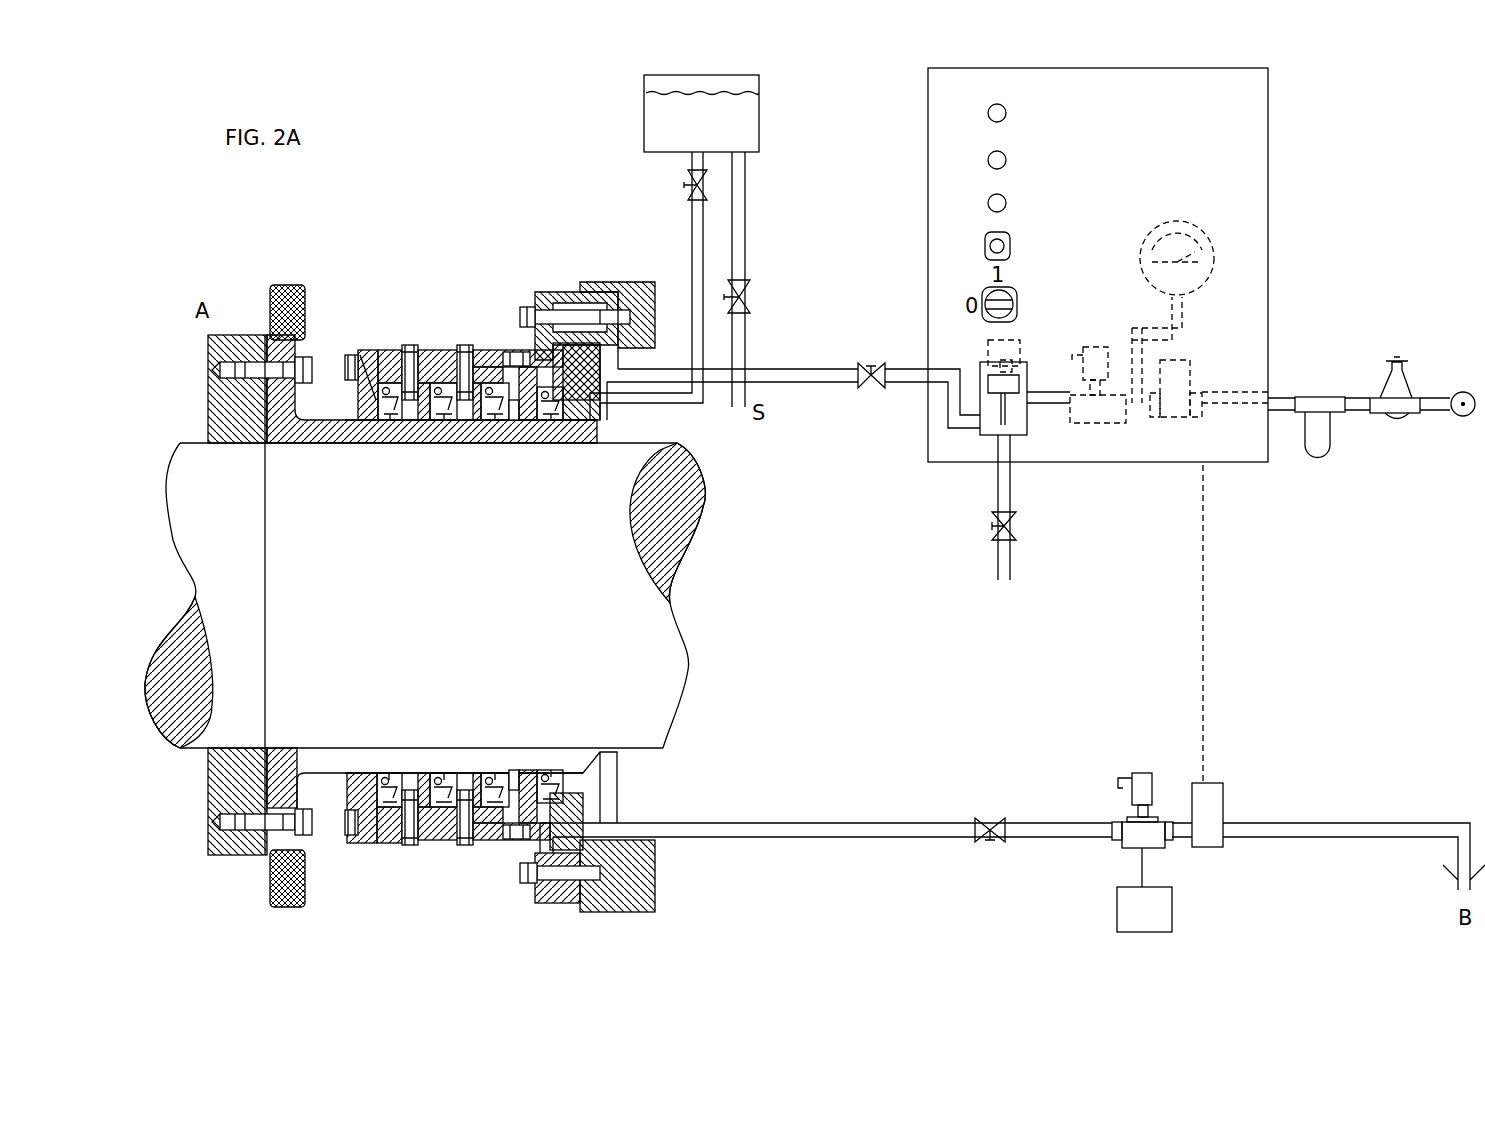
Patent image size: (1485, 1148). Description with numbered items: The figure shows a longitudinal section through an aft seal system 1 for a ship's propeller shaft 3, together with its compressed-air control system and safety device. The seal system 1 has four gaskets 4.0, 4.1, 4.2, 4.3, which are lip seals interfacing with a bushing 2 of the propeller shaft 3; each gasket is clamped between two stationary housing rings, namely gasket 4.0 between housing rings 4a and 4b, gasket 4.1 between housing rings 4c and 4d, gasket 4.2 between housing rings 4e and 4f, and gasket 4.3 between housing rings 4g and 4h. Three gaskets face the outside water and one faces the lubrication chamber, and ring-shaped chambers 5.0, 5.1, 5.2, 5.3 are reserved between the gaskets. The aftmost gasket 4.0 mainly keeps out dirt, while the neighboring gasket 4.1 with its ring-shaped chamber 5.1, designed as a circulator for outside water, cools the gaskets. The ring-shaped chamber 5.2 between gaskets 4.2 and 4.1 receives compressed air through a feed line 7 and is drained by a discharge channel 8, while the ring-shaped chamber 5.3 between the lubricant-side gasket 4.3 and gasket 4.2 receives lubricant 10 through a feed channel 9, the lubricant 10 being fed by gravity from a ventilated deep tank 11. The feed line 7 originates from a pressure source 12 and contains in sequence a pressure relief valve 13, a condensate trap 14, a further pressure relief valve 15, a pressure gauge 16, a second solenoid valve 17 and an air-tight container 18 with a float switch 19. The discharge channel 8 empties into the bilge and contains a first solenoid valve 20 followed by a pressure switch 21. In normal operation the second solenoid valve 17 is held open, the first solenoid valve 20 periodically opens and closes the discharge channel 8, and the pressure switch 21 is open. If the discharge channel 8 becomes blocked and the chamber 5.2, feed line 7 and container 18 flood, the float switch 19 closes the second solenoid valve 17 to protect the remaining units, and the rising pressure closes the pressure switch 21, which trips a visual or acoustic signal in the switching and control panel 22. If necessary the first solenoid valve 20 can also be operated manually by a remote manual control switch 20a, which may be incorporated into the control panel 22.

The seal system 1 is at (446, 240).
The bushing 2 is at (292, 396).
The ship's propeller shaft 3 is at (655, 650).
The gasket 4.0 is at (390, 420).
The gasket 4.1 is at (445, 420).
The gasket 4.2 is at (493, 420).
The gasket 4.3 is at (555, 420).
The ring-shaped chamber 5.0 is at (375, 397).
The ring-shaped chamber 5.1 is at (413, 403).
The ring-shaped chamber 5.2 is at (465, 403).
The ring-shaped chamber 5.3 is at (517, 420).
The housing ring 4a is at (357, 847).
The housing ring 4b is at (390, 845).
The housing ring 4c is at (423, 845).
The housing ring 4d is at (440, 843).
The housing ring 4e is at (477, 840).
The housing ring 4f is at (494, 840).
The housing ring 4g is at (530, 843).
The housing ring 4h is at (583, 808).
The feed line 7 is at (827, 388).
The discharge channel 8 is at (814, 838).
The feed channel 9 is at (693, 228).
The lubricant 10 is at (753, 118).
The deep tank 11 is at (753, 153).
The pressure source 12 is at (1462, 392).
The pressure relief valve 13 is at (1390, 392).
The condensate trap 14 is at (1317, 445).
The pressure relief valve 15 is at (1178, 420).
The pressure gauge 16 is at (1215, 262).
The second solenoid valve 17 is at (1100, 422).
The air-tight container 18 is at (982, 431).
The float switch 19 is at (1000, 378).
The first solenoid valve 20 is at (1135, 845).
The remote manual control switch 20a is at (1172, 907).
The pressure switch 21 is at (1216, 808).
The control panel 22 is at (1258, 166).